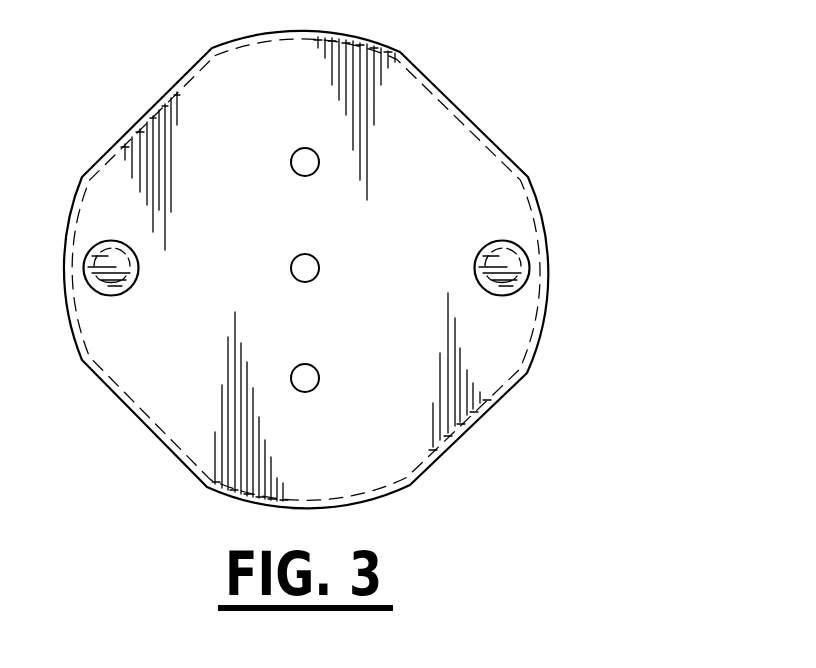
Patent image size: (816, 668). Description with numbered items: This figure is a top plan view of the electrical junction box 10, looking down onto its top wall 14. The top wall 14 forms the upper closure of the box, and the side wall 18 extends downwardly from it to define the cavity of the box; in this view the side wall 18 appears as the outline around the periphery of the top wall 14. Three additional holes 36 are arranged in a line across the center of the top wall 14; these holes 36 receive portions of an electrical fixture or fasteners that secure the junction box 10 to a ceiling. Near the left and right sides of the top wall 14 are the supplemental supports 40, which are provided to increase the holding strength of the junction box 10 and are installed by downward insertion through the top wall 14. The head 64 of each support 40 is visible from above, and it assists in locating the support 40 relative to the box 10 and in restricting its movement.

The junction box 10 is at (494, 118).
The top wall 14 is at (285, 108).
The side wall 18 is at (143, 427).
The additional holes 36 is at (300, 165).
The supplemental support 40 is at (524, 238).
The head 64 is at (517, 295).